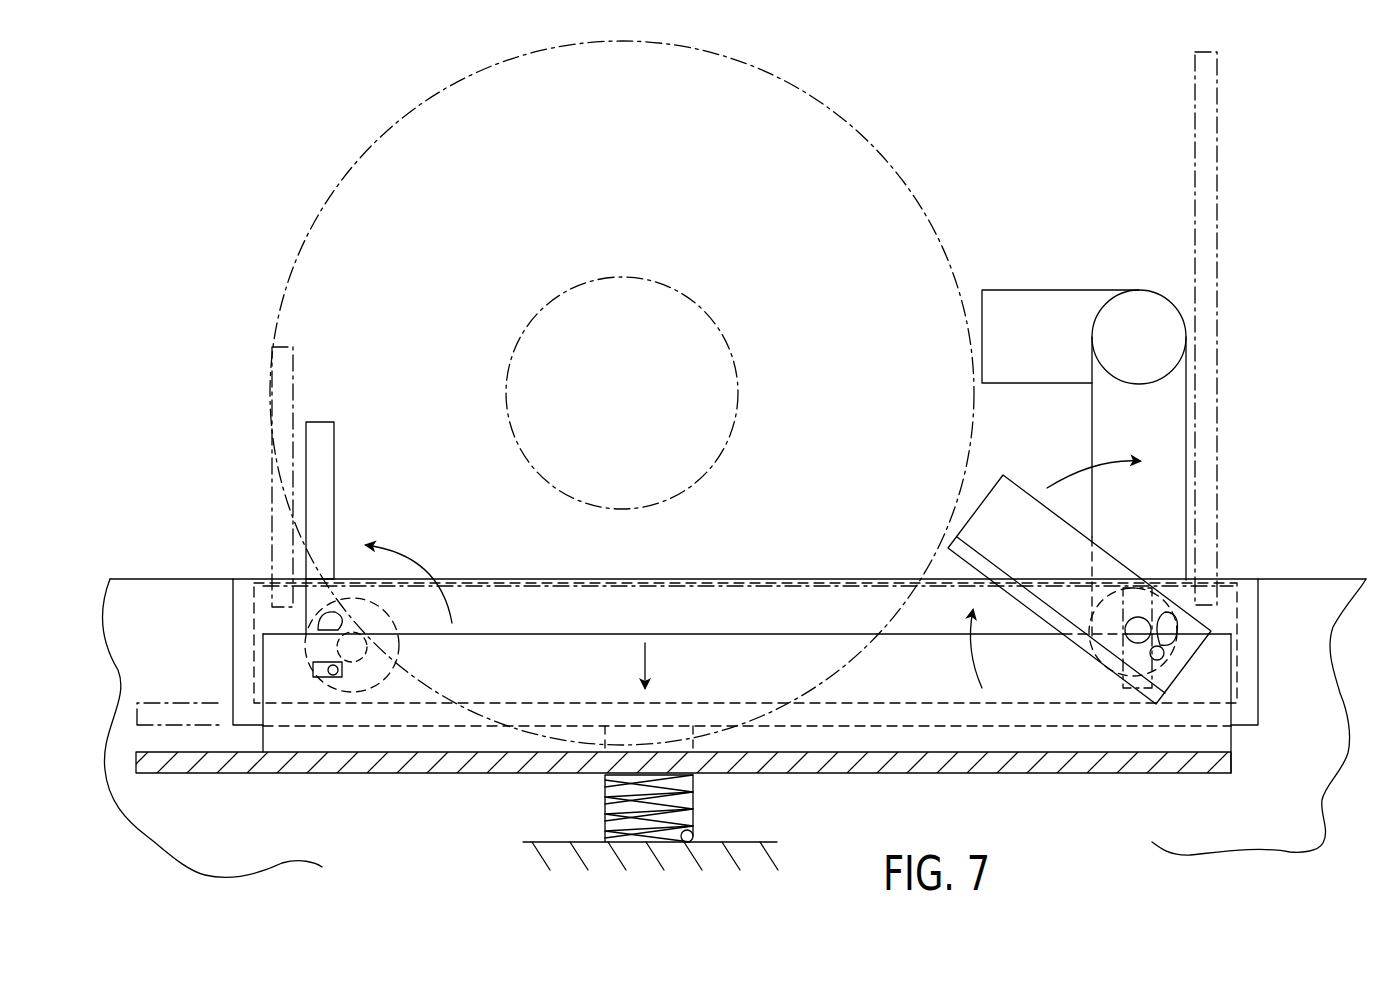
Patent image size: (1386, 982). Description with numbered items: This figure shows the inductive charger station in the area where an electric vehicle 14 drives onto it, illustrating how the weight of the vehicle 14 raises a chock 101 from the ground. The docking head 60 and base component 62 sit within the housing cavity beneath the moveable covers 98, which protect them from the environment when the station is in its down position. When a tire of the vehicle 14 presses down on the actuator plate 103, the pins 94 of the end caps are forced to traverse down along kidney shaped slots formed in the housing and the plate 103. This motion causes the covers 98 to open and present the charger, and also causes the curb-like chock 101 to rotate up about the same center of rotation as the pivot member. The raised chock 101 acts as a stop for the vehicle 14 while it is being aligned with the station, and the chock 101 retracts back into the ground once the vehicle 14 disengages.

The electric vehicle 14 is at (288, 215).
The docking head 60 is at (1072, 288).
The base component 62 is at (1172, 432).
The cover 98 is at (272, 487).
The chock 101 is at (1047, 528).
The pins 94 is at (343, 670).
The actuator plate 103 is at (150, 725).